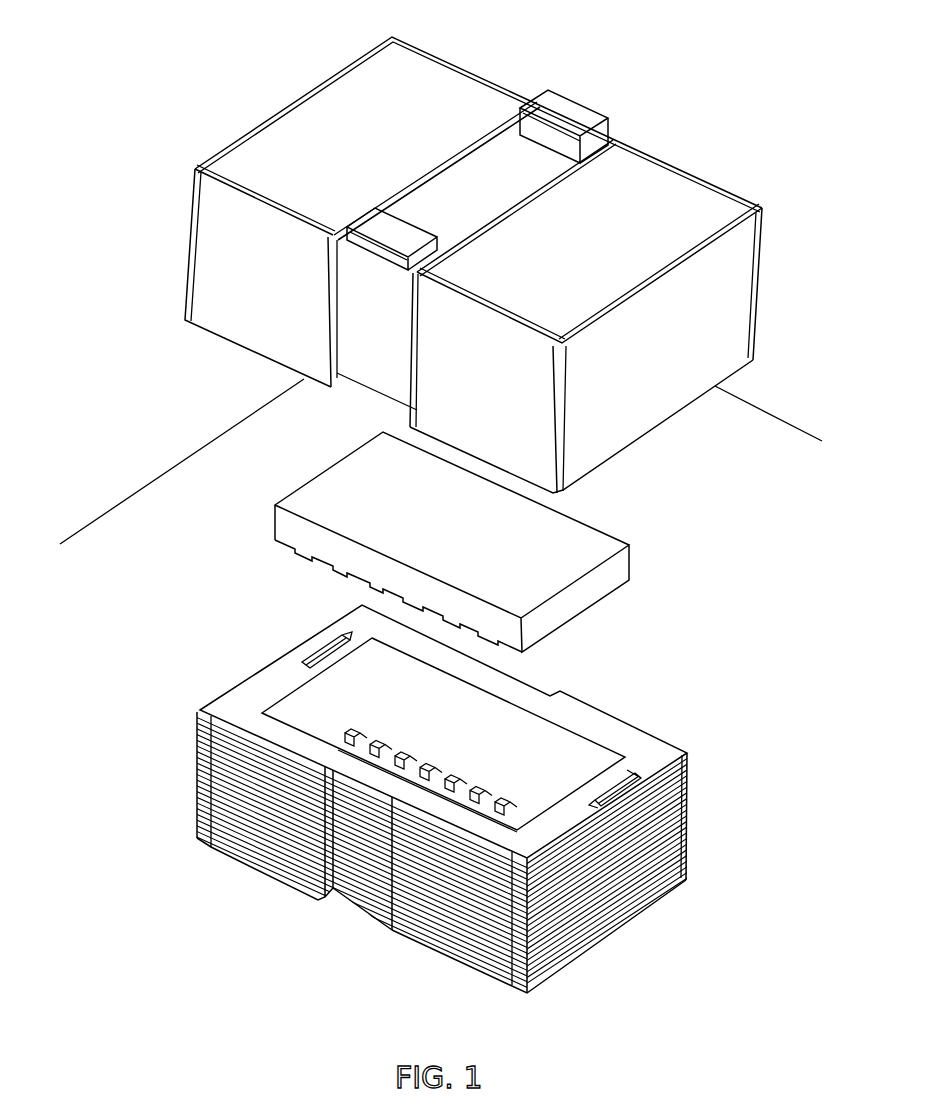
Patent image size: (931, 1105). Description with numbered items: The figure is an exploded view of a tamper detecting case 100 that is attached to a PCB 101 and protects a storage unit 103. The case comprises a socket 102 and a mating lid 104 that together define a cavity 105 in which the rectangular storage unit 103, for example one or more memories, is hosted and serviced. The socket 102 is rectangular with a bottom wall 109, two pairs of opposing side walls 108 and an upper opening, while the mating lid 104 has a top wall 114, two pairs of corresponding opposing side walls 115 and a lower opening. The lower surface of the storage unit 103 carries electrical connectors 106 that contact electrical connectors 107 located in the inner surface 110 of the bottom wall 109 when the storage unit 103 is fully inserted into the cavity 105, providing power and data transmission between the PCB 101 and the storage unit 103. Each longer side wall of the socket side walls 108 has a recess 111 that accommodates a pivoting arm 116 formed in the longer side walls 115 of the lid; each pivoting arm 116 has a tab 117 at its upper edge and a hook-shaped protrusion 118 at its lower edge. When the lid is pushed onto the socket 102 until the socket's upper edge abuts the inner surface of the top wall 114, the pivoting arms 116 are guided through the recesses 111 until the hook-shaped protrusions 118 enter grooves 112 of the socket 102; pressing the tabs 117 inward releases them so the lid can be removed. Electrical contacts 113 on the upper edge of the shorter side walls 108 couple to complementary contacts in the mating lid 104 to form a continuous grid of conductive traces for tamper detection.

The tamper detecting case 100 is at (127, 139).
The PCB 101 is at (143, 488).
The socket 102 is at (688, 748).
The storage unit 103 is at (640, 530).
The mating lid 104 is at (765, 205).
The cavity 105 is at (540, 742).
The electrical connectors 106 is at (332, 572).
The electrical connectors 107 is at (370, 736).
The opposing side walls 108 is at (278, 827).
The bottom wall 109 is at (433, 950).
The inner surface 110 is at (522, 792).
The recess 111 is at (532, 690).
The grooves 112 is at (375, 907).
The electrical contacts 113 is at (305, 662).
The top wall 114 is at (685, 202).
The opposing side walls 115 is at (272, 320).
The pivoting arms 116 is at (615, 143).
The tab 117 is at (376, 214).
The hook-shaped protrusion 118 is at (377, 393).